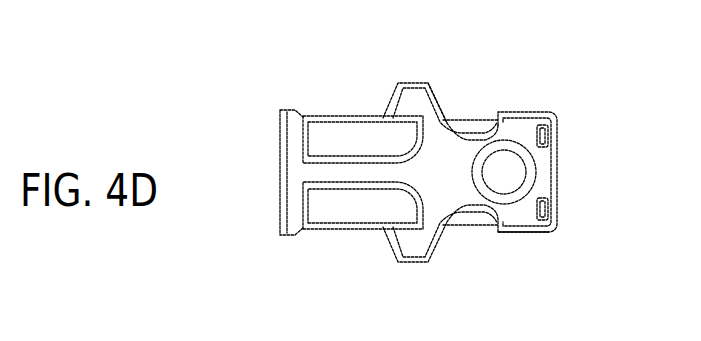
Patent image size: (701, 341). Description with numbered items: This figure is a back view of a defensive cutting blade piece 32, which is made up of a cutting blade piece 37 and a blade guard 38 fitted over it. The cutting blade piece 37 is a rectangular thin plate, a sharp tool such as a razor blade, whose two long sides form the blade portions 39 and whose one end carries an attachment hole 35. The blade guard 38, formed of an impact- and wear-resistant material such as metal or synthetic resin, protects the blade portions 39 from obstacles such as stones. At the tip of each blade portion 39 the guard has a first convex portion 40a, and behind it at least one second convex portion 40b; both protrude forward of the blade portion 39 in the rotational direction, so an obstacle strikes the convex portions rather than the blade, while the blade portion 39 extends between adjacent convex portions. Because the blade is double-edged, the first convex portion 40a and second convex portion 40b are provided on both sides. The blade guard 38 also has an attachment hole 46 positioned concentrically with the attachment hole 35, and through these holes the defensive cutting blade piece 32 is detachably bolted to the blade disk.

The defensive cutting blade piece 32 is at (560, 126).
The attachment hole 35 is at (509, 162).
The cutting blade piece 37 is at (468, 117).
The blade guard 38 is at (429, 76).
The blade portion 39 is at (346, 118).
The first convex portion 40a is at (285, 110).
The second convex portion 40b is at (403, 82).
The attachment hole 46 is at (513, 200).